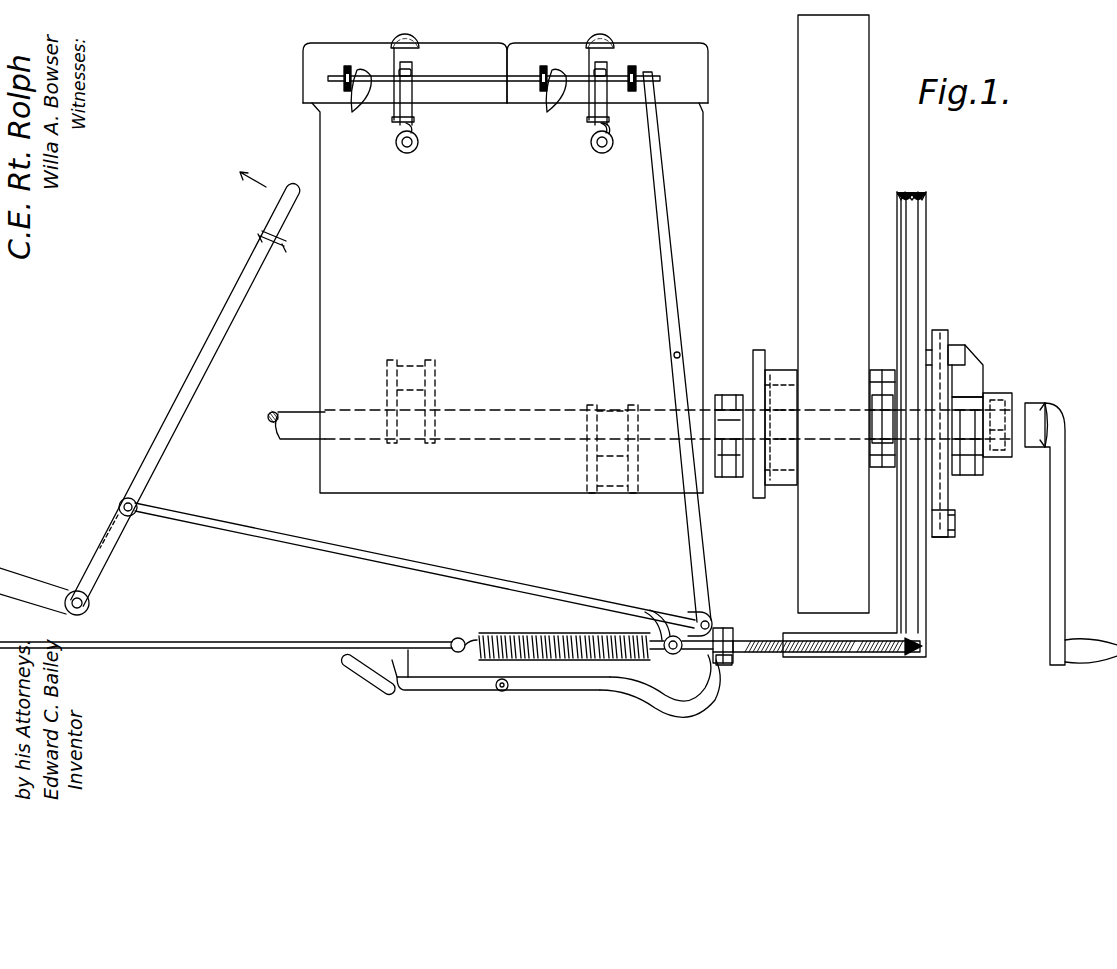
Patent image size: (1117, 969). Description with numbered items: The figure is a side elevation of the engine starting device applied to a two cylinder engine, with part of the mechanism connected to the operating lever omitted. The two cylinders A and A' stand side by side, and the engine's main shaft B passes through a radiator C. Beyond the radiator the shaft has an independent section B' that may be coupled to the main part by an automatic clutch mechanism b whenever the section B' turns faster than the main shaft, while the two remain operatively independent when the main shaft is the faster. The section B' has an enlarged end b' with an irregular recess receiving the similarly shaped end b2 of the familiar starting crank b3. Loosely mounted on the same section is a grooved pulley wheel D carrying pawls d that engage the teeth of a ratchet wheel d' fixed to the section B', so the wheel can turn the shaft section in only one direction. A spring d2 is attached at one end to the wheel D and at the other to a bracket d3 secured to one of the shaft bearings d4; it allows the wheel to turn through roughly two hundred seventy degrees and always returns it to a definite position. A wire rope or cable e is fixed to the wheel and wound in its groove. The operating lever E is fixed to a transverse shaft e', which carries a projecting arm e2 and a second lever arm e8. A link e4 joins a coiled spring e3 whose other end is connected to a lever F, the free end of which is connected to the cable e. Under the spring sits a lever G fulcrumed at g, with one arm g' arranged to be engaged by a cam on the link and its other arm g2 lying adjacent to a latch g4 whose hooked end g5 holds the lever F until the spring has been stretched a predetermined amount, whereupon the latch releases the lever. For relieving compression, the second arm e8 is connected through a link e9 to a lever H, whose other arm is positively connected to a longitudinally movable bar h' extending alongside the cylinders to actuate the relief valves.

The cylinder A is at (505, 268).
The cylinder A' is at (607, 268).
The main shaft B is at (640, 408).
The independent shaft section B' is at (1000, 438).
The radiator C is at (833, 314).
The pulley wheel D is at (916, 258).
The operating lever E is at (160, 436).
The lever F is at (712, 622).
The lever G is at (575, 676).
The lever H is at (662, 292).
The automatic clutch mechanism b is at (775, 419).
The enlarged end b' is at (1005, 400).
The crank end b2 is at (1038, 415).
The starting crank b3 is at (1062, 540).
The screw rod c is at (760, 660).
The pawl d is at (882, 403).
The ratchet wheel d' is at (865, 419).
The spring d2 is at (942, 332).
The bracket d3 is at (965, 356).
The shaft bearing d4 is at (970, 408).
The wire rope or cable e is at (383, 693).
The transverse shaft e' is at (93, 604).
The projecting arm e2 is at (27, 580).
The coiled spring e3 is at (586, 652).
The link e4 is at (232, 656).
The second lever arm e8 is at (100, 543).
The link e9 is at (255, 536).
The fulcrum g is at (501, 698).
The lever arm g' is at (371, 675).
The lever arm g2 is at (685, 700).
The latch g4 is at (722, 664).
The hooked end g5 is at (648, 618).
The movable bar h' is at (494, 67).